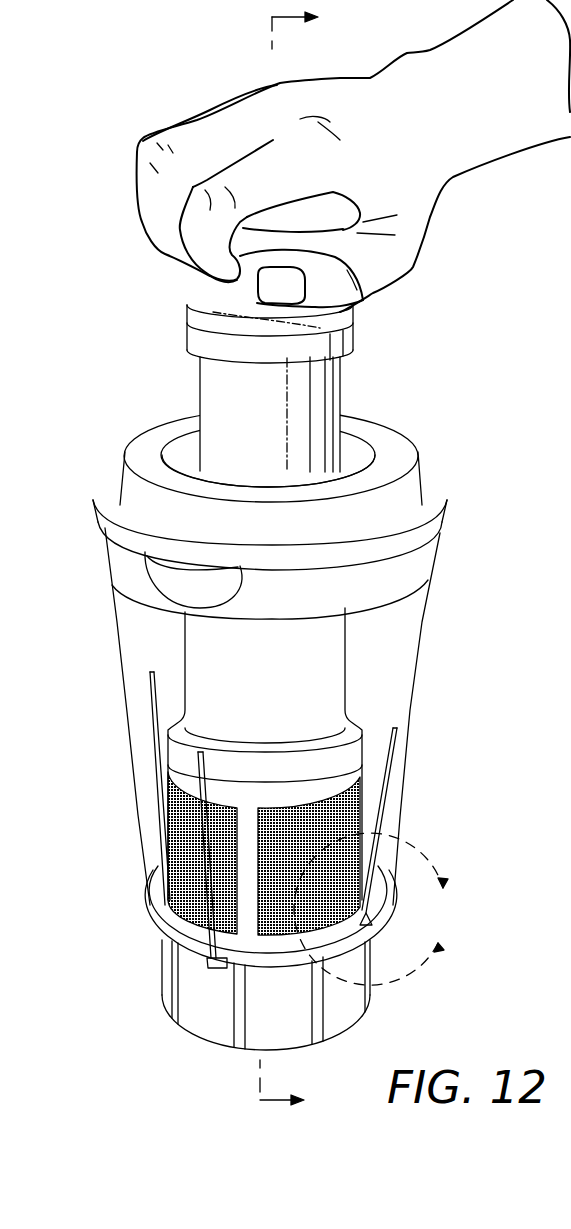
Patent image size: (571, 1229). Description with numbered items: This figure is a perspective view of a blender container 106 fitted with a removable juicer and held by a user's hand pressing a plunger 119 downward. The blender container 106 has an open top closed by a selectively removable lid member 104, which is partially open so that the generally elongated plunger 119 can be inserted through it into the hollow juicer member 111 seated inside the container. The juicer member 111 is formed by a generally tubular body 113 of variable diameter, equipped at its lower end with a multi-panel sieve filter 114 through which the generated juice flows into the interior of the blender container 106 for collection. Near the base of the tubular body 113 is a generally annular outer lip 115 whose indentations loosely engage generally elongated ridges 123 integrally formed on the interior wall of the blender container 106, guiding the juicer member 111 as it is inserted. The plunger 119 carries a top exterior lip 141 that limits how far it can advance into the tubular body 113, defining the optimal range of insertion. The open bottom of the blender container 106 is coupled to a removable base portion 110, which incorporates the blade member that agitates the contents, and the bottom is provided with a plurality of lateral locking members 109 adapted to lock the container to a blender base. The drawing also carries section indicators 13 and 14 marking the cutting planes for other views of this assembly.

The lid member 104 is at (390, 497).
The blender container 106 is at (393, 685).
The lateral locking members 109 is at (163, 937).
The removable base portion 110 is at (203, 987).
The juicer member 111 is at (216, 650).
The tubular body 113 is at (330, 647).
The multi-panel sieve filter 114 is at (347, 803).
The outer lip 115 is at (357, 888).
The plunger 119 is at (318, 396).
The ridges 123 is at (163, 792).
The top exterior lip 141 is at (347, 338).
The section line 13 is at (378, 909).
The section line 14 is at (305, 560).